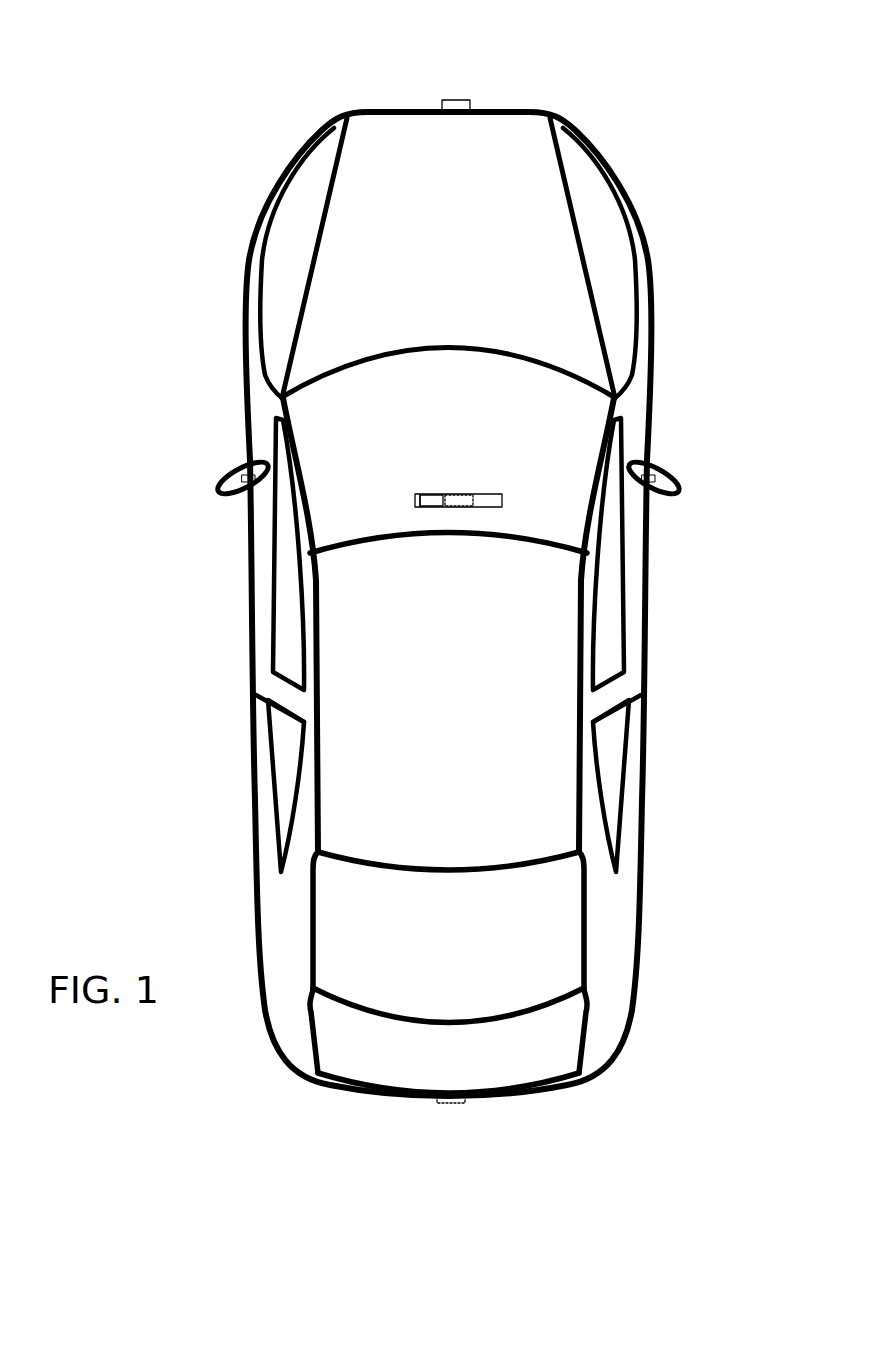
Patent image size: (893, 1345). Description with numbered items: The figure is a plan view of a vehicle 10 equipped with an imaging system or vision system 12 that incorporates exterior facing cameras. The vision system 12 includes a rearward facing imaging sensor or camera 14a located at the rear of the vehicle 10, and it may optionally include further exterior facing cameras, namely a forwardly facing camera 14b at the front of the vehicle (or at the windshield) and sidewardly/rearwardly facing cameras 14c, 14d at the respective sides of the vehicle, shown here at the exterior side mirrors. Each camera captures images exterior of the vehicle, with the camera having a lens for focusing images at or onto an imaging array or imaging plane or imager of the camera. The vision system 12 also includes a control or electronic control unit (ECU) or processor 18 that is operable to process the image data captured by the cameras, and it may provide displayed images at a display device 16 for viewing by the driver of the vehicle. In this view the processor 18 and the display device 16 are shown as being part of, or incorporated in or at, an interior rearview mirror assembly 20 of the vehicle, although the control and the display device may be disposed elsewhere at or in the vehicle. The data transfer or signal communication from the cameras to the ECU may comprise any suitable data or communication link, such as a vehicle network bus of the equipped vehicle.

The vehicle 10 is at (436, 615).
The vision system 12 is at (392, 1130).
The rearward facing camera 14a is at (465, 1102).
The forwardly facing camera 14b is at (458, 100).
The sidewardly/rearwardly facing camera 14c is at (238, 473).
The sidewardly/rearwardly facing camera 14d is at (663, 473).
The display device 16 is at (430, 492).
The electronic control unit (ECU) or processor 18 is at (455, 490).
The interior rearview mirror assembly 20 is at (502, 494).